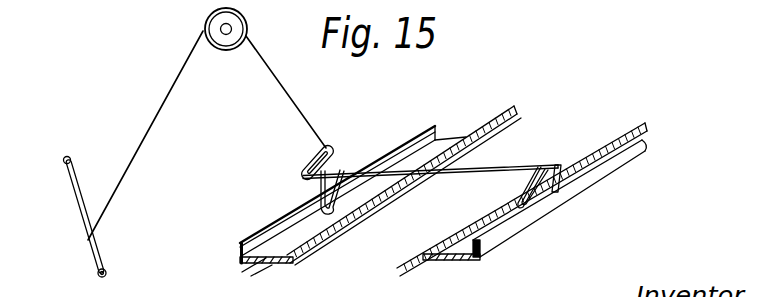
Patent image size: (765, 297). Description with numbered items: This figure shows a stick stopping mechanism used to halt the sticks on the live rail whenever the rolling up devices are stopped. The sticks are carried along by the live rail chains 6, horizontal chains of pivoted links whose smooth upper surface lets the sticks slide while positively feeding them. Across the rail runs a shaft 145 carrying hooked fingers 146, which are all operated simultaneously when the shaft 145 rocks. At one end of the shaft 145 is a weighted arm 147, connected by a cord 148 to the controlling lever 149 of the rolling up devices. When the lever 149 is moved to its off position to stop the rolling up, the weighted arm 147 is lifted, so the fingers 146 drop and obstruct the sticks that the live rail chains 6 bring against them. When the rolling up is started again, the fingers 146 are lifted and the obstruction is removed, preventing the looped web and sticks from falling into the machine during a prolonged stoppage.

The live rail chains 6 is at (634, 123).
The shaft 145 is at (508, 171).
The hooked fingers 146 is at (512, 203).
The weighted arm 147 is at (333, 148).
The cord 148 is at (165, 109).
The controlling lever 149 is at (78, 205).